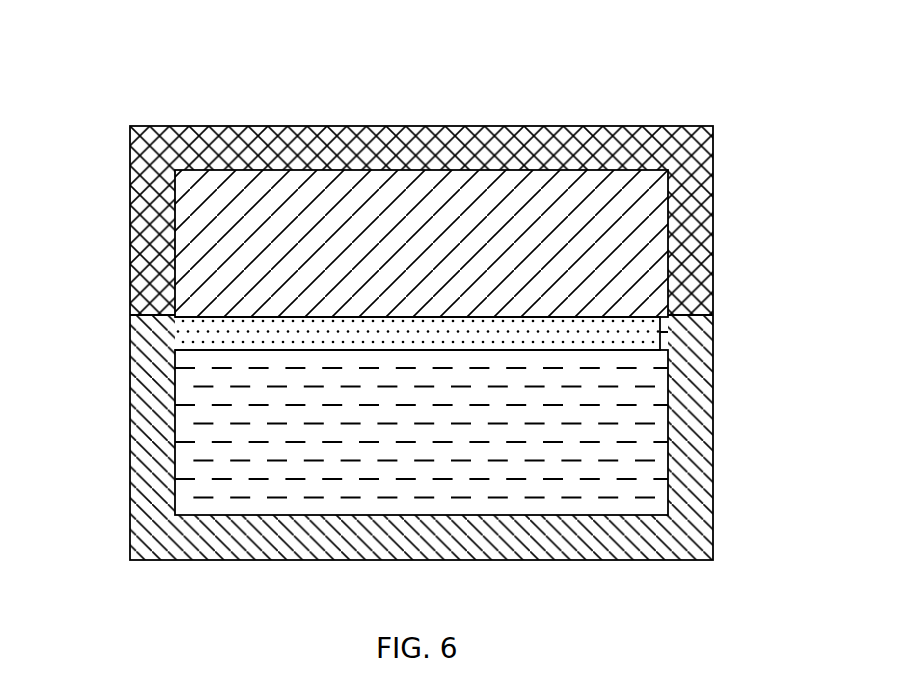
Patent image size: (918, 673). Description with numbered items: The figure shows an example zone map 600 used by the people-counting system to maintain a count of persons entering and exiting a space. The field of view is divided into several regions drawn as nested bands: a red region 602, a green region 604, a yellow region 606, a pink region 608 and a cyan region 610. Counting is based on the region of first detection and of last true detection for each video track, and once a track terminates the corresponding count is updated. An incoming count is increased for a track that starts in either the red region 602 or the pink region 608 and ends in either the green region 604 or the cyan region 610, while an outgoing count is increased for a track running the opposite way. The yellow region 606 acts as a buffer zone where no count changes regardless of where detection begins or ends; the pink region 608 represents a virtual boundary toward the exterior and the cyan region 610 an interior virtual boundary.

The zone map 600 is at (600, 70).
The red region 602 is at (637, 257).
The green region 604 is at (196, 400).
The yellow region 606 is at (242, 342).
The pink region 608 is at (182, 148).
The cyan region 610 is at (700, 461).